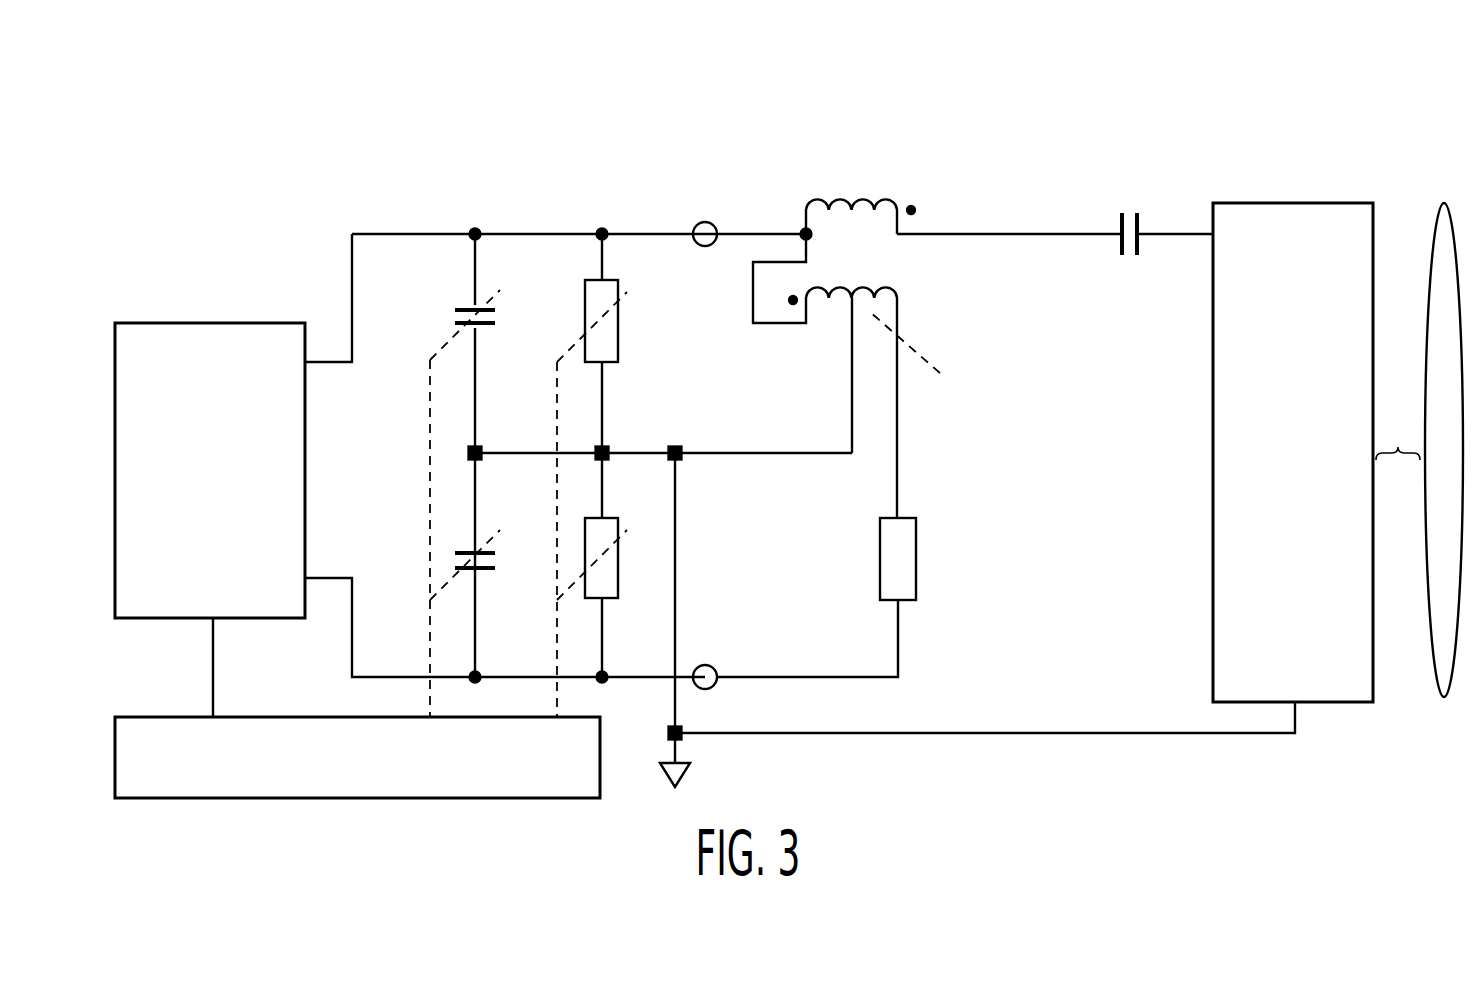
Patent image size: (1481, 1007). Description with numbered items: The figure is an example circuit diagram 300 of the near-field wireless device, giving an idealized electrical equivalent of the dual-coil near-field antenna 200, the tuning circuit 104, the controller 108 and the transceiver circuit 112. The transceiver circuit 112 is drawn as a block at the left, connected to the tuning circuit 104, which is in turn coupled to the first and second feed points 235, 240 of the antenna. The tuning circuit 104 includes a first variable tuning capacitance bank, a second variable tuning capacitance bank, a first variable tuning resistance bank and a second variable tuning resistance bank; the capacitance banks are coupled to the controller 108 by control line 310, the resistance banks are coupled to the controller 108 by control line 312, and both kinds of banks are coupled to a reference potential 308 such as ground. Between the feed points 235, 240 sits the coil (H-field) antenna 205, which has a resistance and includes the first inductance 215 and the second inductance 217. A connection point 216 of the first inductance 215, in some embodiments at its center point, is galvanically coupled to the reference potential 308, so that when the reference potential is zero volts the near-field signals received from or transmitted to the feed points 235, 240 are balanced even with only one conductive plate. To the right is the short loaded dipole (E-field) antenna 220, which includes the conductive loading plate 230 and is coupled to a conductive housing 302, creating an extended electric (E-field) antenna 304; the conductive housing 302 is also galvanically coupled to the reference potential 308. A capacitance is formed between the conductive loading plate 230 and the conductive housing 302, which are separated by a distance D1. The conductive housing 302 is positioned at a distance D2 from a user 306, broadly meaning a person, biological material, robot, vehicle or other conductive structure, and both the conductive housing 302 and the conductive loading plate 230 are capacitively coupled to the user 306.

The circuit diagram 300 is at (183, 112).
The transceiver circuit 112 is at (163, 323).
The controller 108 is at (168, 717).
The tuning circuit 104 is at (673, 234).
The control line 310 is at (430, 432).
The control line 312 is at (557, 428).
The feed point 240 is at (705, 247).
The feed point 235 is at (707, 665).
The reference potential 308 is at (690, 782).
The dual-coil near-field antenna 200 is at (743, 234).
The coil (H-field) antenna 205 is at (930, 234).
The inductance (L2) 217 is at (840, 193).
The inductance (L1) 215 is at (885, 285).
The connection point 216 is at (927, 356).
The short loaded dipole (E-field) antenna 220 is at (1130, 213).
The conductive loading plate 230 is at (1118, 242).
The distance D1 is at (1128, 306).
The conductive housing 302 is at (1140, 242).
The extended electric (E-field) antenna 304 is at (1372, 203).
The user 306 is at (1443, 204).
The distance D2 is at (1398, 435).